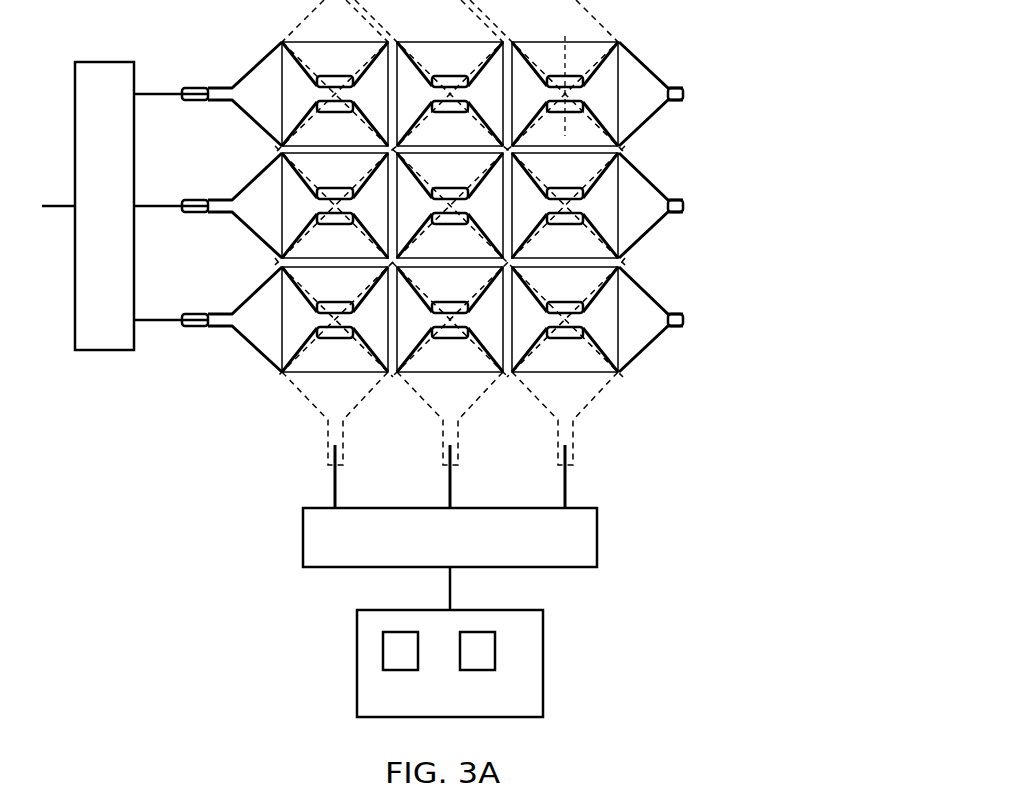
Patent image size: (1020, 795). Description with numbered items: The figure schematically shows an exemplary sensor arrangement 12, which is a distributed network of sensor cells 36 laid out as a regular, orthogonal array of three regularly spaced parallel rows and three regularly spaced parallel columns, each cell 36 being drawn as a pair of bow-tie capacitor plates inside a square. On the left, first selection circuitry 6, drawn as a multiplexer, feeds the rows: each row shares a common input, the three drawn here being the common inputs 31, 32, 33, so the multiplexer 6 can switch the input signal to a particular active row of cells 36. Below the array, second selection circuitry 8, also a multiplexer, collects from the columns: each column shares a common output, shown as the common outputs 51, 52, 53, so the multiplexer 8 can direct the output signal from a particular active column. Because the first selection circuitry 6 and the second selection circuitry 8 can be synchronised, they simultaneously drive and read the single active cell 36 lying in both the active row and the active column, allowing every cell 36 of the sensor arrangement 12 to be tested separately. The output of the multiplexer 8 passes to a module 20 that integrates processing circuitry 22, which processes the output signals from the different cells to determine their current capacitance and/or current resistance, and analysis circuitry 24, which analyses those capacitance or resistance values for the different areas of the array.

The common input 31 is at (200, 87).
The common input 32 is at (200, 199).
The common input 33 is at (200, 313).
The common output 51 is at (330, 455).
The common output 52 is at (445, 455).
The common output 53 is at (560, 455).
The first selection circuitry 6 is at (105, 350).
The second selection circuitry 8 is at (597, 540).
The sensor arrangement 12 is at (487, 230).
The module 20 is at (449, 663).
The processing circuitry 22 is at (383, 652).
The analysis circuitry 24 is at (470, 670).
The sensor cell 36 is at (616, 79).